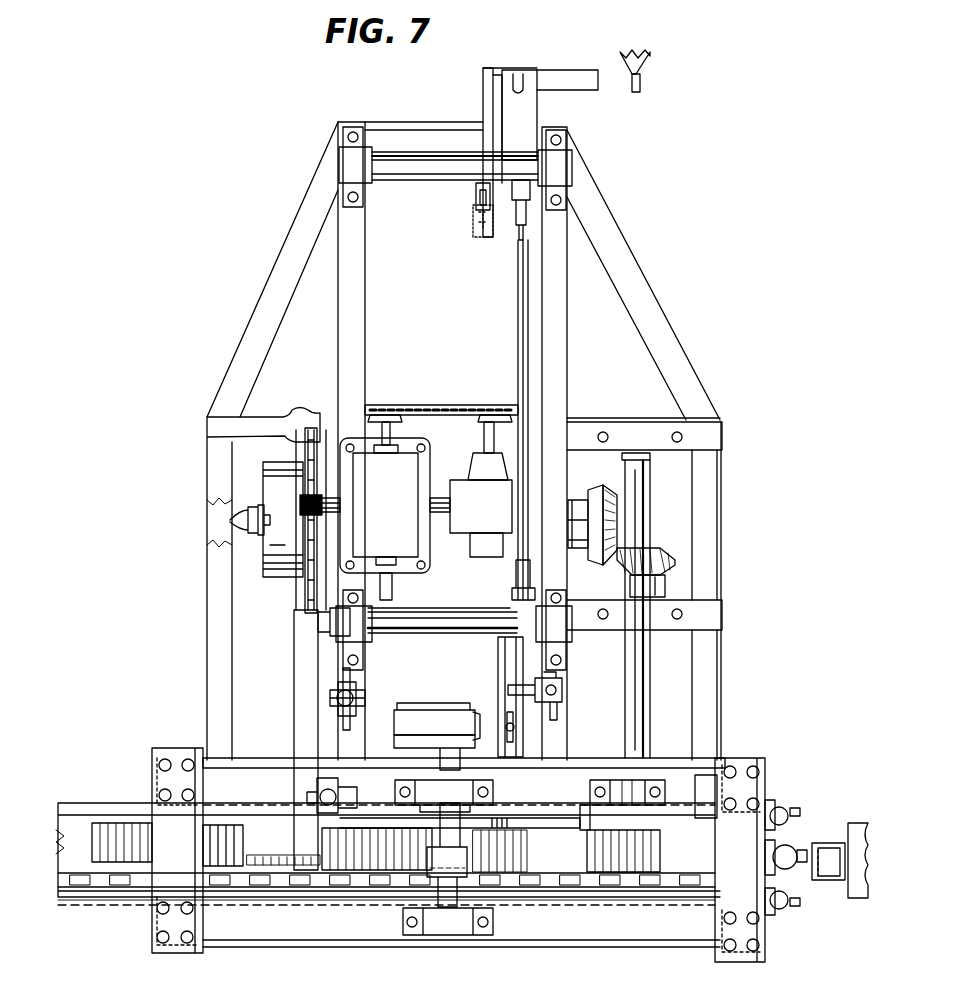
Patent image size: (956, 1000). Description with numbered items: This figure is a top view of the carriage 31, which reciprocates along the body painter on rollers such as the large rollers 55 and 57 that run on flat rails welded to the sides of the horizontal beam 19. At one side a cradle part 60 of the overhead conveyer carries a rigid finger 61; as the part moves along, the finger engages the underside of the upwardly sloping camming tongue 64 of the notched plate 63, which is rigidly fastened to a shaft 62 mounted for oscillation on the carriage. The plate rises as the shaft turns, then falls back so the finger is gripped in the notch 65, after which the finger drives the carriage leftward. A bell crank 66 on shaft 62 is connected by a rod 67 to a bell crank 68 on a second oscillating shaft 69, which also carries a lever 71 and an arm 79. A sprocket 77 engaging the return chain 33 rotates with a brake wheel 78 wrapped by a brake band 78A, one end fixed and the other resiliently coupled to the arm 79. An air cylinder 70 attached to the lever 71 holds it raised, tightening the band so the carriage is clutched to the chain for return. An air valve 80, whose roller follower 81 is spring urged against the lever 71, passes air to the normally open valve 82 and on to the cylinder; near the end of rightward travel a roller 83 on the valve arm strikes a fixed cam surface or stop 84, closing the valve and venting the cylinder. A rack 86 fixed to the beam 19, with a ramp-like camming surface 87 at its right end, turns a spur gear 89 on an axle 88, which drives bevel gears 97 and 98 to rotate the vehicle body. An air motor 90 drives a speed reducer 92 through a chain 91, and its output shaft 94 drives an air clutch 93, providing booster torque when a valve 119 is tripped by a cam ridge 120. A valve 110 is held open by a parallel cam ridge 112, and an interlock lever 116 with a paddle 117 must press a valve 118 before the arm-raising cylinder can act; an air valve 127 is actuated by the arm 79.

The horizontal beam 19 is at (70, 820).
The carriage 31 is at (190, 685).
The chain 33 is at (588, 882).
The large roller 55 is at (152, 772).
The large roller 57 is at (152, 926).
The cradle part 60 is at (652, 70).
The rigid finger 61 is at (643, 80).
The shaft 62 is at (430, 172).
The notched plate 63 is at (530, 118).
The camming tongue 64 is at (578, 72).
The notch 65 is at (520, 68).
The bell crank 66 is at (515, 215).
The rod 67 is at (527, 324).
The bell crank 68 is at (512, 602).
The shaft 69 is at (462, 628).
The air cylinder 70 is at (340, 798).
The lever 71 is at (302, 728).
The sprocket 77 is at (428, 884).
The brake wheel 78 is at (432, 706).
The brake band 78A is at (405, 724).
The arm 79 is at (500, 660).
The air valve 80 is at (352, 690).
The roller follower 81 is at (325, 698).
The valve 82 is at (798, 852).
The roller 83 is at (828, 848).
The cam surface or stop 84 is at (830, 872).
The rack 86 is at (108, 822).
The camming surface 87 is at (508, 820).
The axle 88 is at (643, 678).
The spur gear 89 is at (586, 843).
The air motor 90 is at (481, 505).
The chain 91 is at (446, 406).
The speed reducer 92 is at (385, 519).
The air clutch 93 is at (278, 520).
The output shaft 94 is at (334, 498).
The bevel gear 97 is at (662, 548).
The bevel gear 98 is at (608, 488).
The air valve 110 is at (780, 905).
The cam ridge 112 is at (115, 893).
The interlock lever 116 is at (486, 106).
The paddle 117 is at (474, 222).
The valve 118 is at (476, 192).
The valve 119 is at (780, 806).
The cam ridge 120 is at (592, 818).
The air valve 127 is at (560, 688).